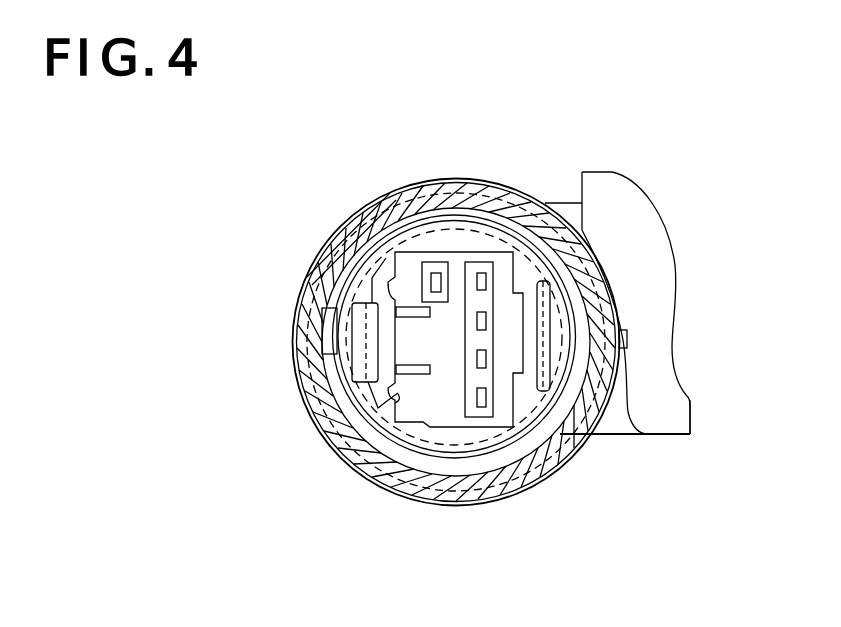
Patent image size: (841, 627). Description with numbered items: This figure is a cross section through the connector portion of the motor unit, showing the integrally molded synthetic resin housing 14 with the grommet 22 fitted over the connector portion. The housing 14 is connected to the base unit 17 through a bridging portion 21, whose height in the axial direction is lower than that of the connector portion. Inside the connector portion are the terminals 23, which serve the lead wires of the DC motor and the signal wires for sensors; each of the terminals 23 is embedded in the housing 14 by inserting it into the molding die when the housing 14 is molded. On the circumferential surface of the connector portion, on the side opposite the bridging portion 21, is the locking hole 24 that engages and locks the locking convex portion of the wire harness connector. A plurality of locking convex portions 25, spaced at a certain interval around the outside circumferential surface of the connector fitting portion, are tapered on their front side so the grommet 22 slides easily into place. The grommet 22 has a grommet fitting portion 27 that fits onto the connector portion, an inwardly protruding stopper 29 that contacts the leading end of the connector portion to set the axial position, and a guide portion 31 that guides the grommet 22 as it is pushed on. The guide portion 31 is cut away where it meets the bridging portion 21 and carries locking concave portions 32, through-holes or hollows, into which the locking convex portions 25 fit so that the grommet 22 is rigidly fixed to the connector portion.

The housing 14 is at (700, 389).
The base unit 17 is at (645, 222).
The bridging portion 21 is at (615, 435).
The grommet 22 is at (308, 256).
The terminals 23 is at (425, 288).
The locking hole 24 is at (318, 333).
The locking convex portions 25 is at (448, 178).
The grommet fitting portion 27 is at (349, 236).
The stopper 29 is at (408, 398).
The guide portion 31 is at (297, 290).
The locking concave portions 32 is at (415, 178).